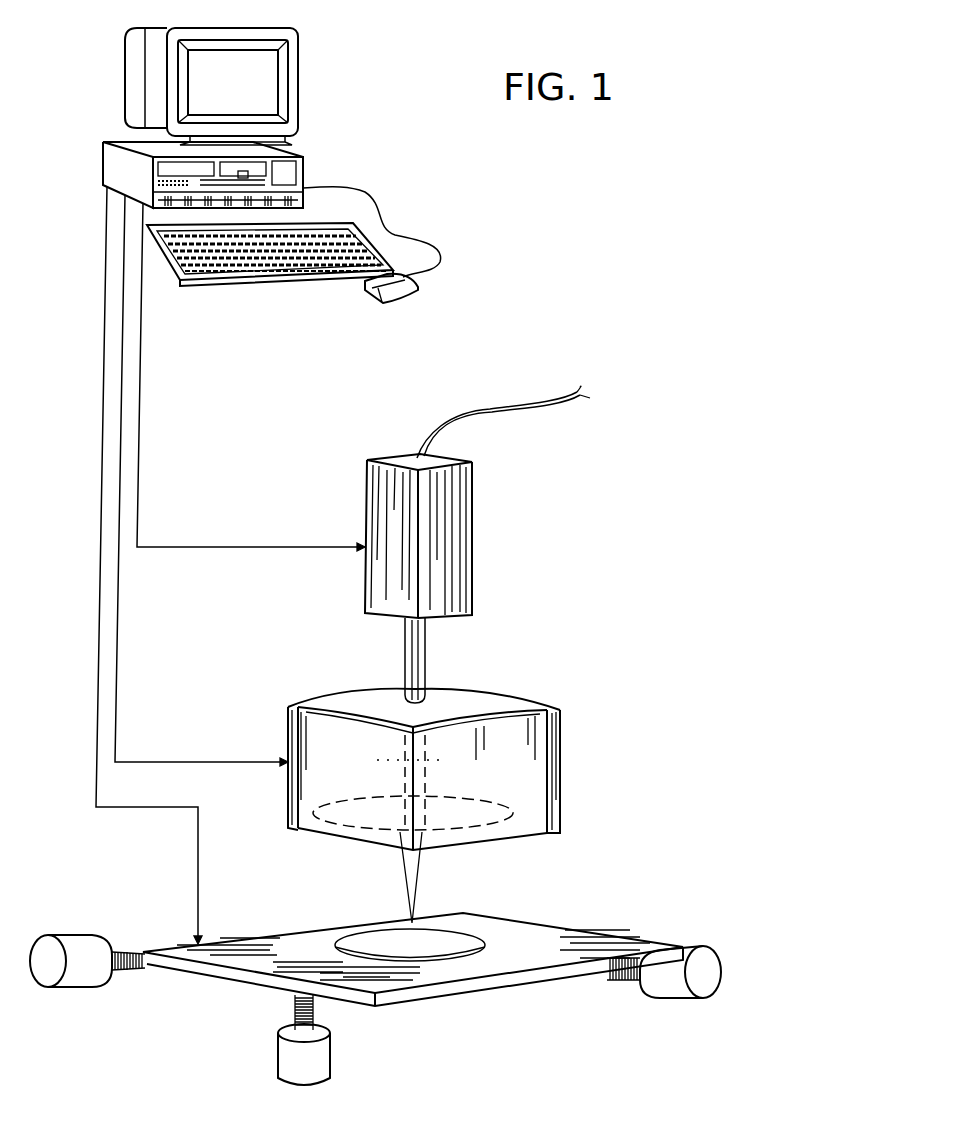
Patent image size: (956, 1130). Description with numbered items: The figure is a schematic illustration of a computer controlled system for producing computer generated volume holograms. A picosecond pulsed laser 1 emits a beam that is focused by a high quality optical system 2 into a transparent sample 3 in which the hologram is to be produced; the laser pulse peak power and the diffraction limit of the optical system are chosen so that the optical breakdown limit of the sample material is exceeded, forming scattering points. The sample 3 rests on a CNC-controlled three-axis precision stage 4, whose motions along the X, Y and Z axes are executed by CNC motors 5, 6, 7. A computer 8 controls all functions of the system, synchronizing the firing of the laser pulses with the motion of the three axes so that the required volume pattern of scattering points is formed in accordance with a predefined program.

The picosecond pulsed laser 1 is at (472, 538).
The high quality optical system 2 is at (560, 750).
The transparent sample 3 is at (485, 945).
The three-axis precision stage 4 is at (463, 987).
The CNC motor 5 is at (90, 978).
The CNC motor 6 is at (657, 987).
The CNC motor 7 is at (288, 1058).
The computer 8 is at (257, 86).